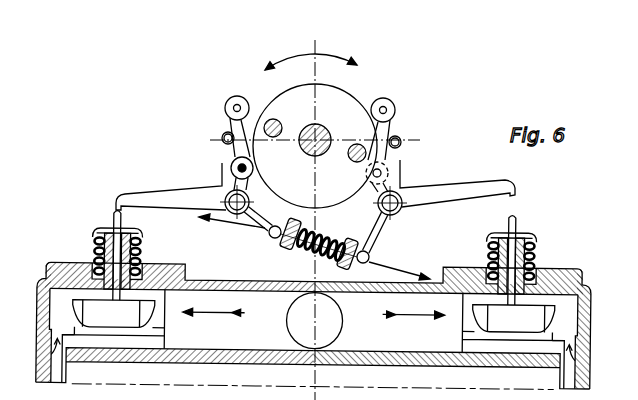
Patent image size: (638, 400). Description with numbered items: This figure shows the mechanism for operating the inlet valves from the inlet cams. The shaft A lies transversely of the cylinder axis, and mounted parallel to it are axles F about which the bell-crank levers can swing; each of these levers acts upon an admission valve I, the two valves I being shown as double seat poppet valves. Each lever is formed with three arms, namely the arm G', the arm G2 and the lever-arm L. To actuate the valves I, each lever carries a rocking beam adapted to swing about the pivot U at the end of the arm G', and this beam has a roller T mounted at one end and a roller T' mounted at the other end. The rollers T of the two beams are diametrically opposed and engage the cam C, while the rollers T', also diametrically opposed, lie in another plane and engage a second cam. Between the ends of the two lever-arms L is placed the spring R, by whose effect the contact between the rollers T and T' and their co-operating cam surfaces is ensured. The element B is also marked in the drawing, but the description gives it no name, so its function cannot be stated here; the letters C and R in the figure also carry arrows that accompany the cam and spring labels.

The shaft A is at (315, 140).
The eccentric pins B is at (273, 128).
The roller T' is at (317, 121).
The pivot U is at (222, 132).
The roller T is at (316, 107).
The arm of lever G G' is at (315, 157).
The arm of lever G G2 is at (210, 197).
The lever-arm L is at (292, 187).
The axle F is at (262, 173).
The cam C is at (265, 228).
The spring R is at (369, 257).
The admission valve I is at (130, 317).